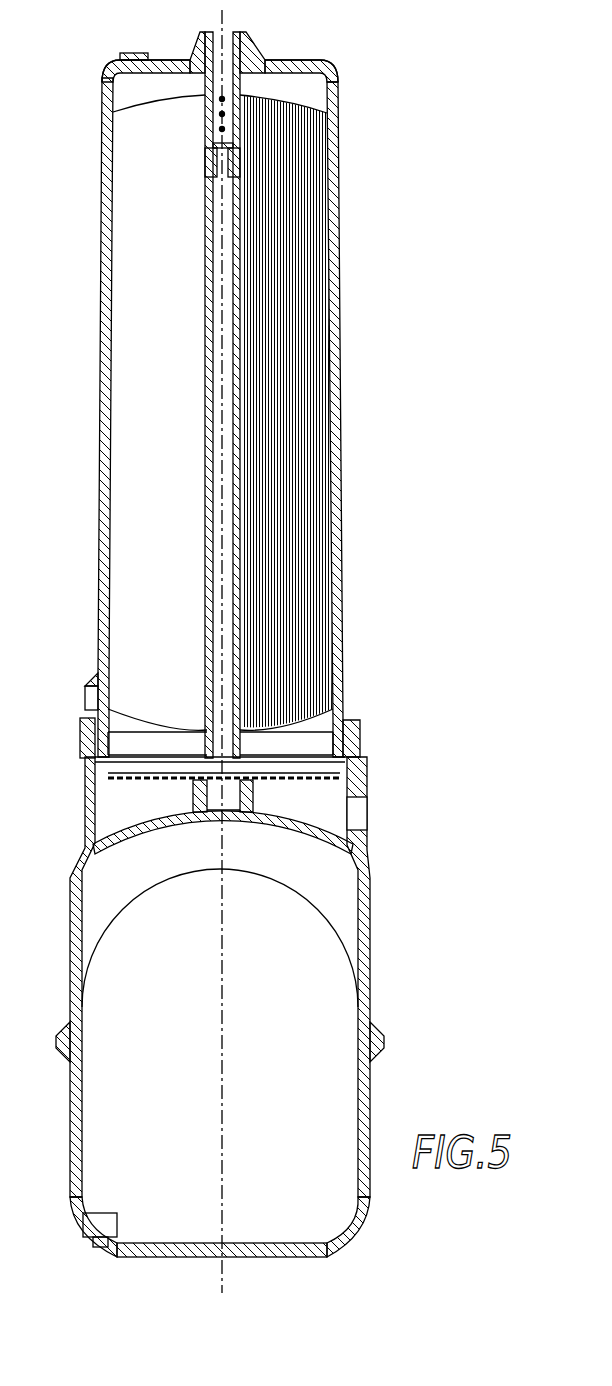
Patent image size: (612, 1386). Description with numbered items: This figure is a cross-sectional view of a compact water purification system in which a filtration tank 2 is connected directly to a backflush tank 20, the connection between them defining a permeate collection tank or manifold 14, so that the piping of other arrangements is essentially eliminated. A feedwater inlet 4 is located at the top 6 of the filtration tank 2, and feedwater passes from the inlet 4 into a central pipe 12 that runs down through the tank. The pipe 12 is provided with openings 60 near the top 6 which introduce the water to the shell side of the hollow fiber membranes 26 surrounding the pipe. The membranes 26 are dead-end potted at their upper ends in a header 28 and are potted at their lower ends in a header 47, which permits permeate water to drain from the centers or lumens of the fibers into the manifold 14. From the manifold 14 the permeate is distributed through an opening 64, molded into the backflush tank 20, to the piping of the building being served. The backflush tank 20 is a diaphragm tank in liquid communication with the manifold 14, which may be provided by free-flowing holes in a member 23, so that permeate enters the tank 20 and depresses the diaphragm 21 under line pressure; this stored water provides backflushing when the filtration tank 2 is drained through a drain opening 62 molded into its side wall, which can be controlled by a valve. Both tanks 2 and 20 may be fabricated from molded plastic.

The filtration tank 2 is at (102, 220).
The feedwater inlet 4 is at (222, 32).
The top 6 is at (278, 62).
The pipe 12 is at (200, 347).
The permeate collection tank or manifold 14 is at (335, 788).
The backflush tank 20 is at (368, 922).
The diaphragm 21 is at (285, 902).
The member 23 is at (120, 838).
The hollow fiber membranes 26 is at (305, 292).
The header 28 is at (322, 89).
The header 47 is at (320, 742).
The openings 60 is at (220, 99).
The drain opening 62 is at (85, 697).
The opening 64 is at (360, 808).